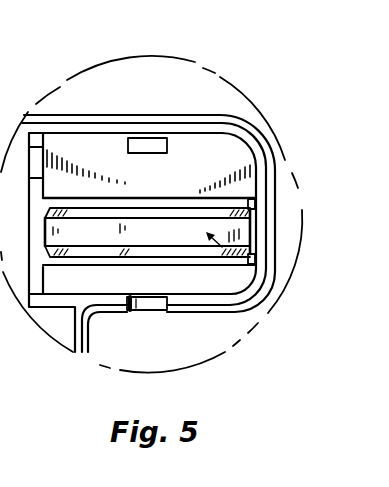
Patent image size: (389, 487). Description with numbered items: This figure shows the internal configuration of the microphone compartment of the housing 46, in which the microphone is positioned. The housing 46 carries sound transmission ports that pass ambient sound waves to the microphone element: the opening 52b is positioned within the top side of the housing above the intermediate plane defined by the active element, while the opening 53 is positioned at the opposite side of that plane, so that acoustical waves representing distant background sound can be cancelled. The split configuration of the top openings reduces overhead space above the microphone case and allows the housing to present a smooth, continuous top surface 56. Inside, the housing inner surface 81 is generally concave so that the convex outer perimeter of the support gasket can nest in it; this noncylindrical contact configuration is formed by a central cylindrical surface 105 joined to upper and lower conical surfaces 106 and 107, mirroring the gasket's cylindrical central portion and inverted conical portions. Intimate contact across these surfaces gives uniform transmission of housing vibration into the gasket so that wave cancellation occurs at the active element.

The housing 46 is at (276, 170).
The top surface 56 is at (82, 113).
The opening 52b is at (151, 141).
The conical surface 106 is at (252, 210).
The cylindrical surface 105 is at (253, 226).
The housing inner surface 81 is at (253, 255).
The conical surface 107 is at (205, 258).
The opening 53 is at (153, 310).